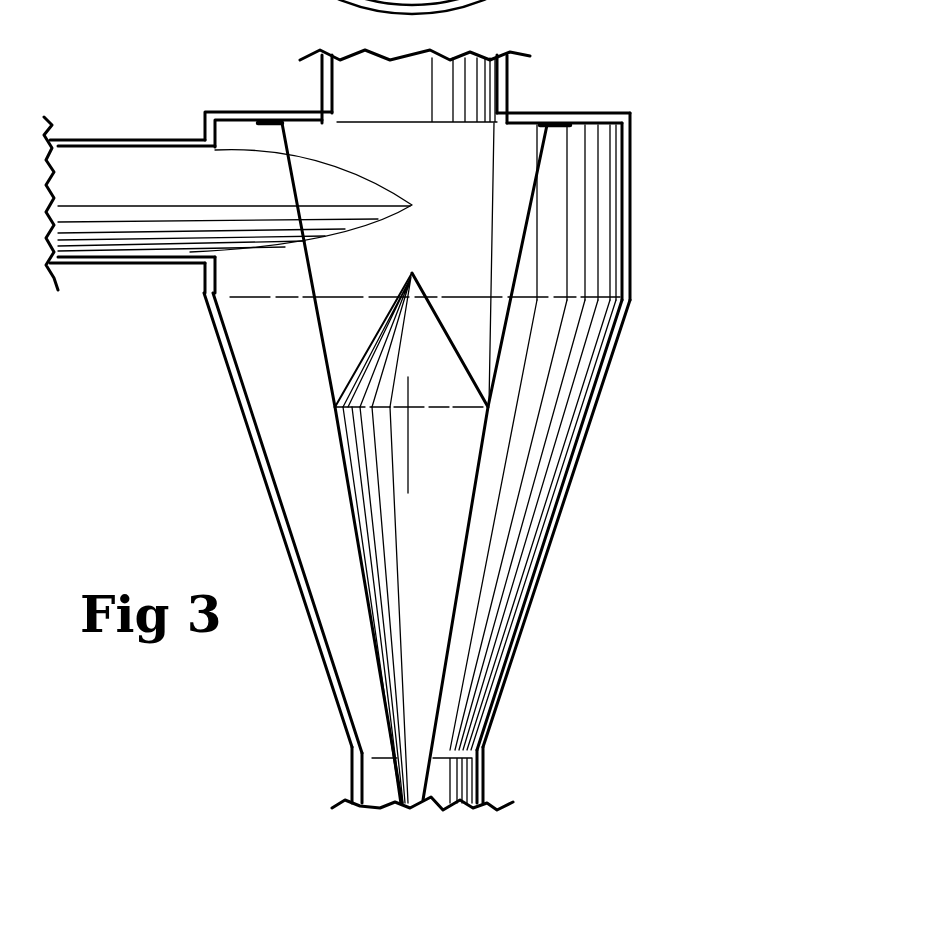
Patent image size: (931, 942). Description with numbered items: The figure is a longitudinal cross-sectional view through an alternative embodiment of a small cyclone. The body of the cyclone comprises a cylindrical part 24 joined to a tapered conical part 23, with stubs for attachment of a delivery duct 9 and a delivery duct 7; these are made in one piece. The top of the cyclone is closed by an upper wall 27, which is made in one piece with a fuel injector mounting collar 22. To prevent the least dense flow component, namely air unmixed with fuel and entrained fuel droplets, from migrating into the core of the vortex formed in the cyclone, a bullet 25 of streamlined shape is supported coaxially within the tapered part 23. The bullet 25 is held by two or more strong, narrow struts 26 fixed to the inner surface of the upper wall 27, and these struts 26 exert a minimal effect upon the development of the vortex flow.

The delivery duct 7 is at (322, 770).
The delivery duct 9 is at (228, 165).
The fuel injector mounting collar 22 is at (392, 61).
The conical part 23 is at (474, 523).
The cylindrical part 24 is at (517, 206).
The bullet 25 is at (571, 538).
The struts 26 is at (433, 281).
The upper wall 27 is at (444, 79).